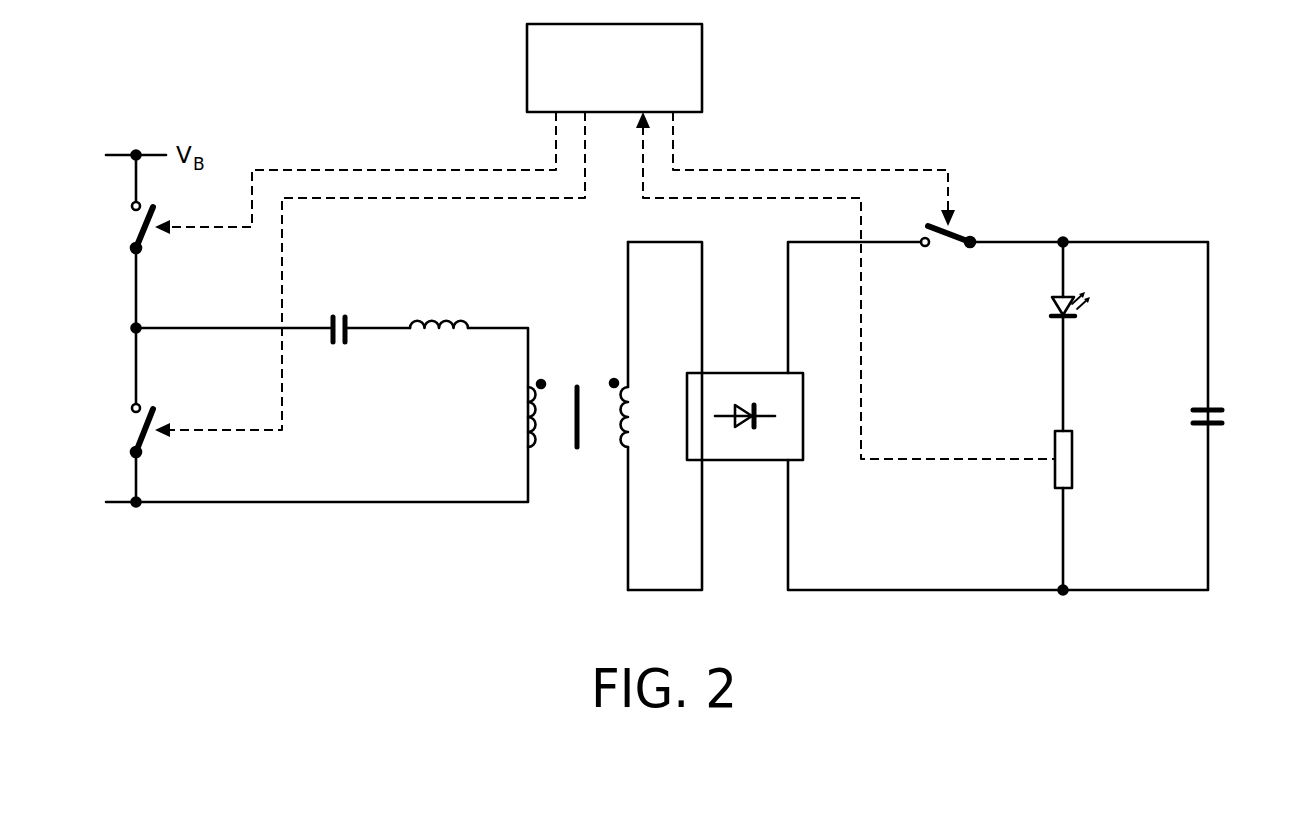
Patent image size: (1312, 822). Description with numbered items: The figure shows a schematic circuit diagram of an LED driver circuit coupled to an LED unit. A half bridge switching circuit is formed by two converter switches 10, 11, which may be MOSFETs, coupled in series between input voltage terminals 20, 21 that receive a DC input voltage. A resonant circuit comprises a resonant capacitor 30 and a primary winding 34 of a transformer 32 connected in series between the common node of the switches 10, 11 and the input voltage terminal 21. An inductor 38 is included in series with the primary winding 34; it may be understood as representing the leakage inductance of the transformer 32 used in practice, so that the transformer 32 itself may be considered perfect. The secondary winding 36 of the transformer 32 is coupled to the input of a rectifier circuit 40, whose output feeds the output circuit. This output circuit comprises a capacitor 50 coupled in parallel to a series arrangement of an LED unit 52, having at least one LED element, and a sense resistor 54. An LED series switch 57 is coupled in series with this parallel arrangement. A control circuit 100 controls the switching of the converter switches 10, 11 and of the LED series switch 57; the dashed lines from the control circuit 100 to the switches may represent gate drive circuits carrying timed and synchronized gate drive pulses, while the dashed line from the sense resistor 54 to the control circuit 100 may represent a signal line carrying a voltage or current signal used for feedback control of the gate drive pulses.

The input voltage terminal 20 is at (136, 153).
The converter switch 10 is at (134, 228).
The converter switch 11 is at (134, 430).
The input voltage terminal 21 is at (112, 504).
The control circuit 100 is at (526, 58).
The resonant capacitor 30 is at (339, 345).
The inductor 38 is at (452, 332).
The transformer 32 is at (578, 353).
The primary winding 34 is at (532, 450).
The secondary winding 36 is at (624, 450).
The rectifier circuit 40 is at (745, 462).
The LED series switch 57 is at (958, 248).
The LED unit 52 is at (1074, 318).
The sense resistor 54 is at (1074, 440).
The capacitor 50 is at (1224, 416).